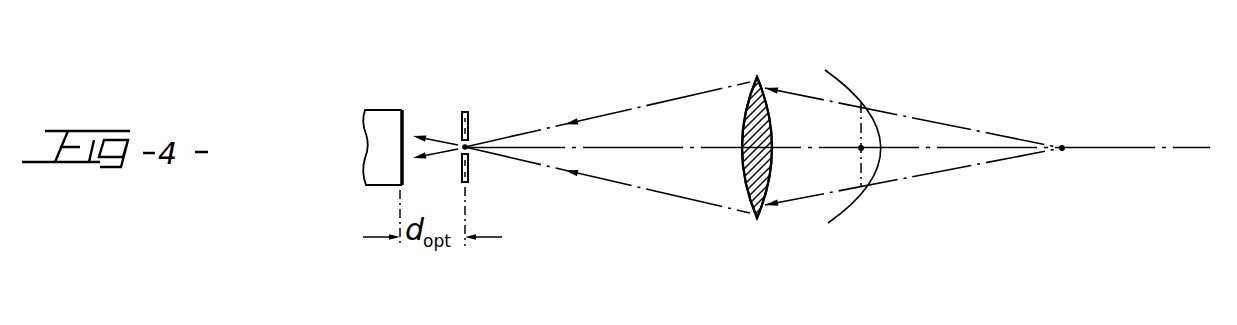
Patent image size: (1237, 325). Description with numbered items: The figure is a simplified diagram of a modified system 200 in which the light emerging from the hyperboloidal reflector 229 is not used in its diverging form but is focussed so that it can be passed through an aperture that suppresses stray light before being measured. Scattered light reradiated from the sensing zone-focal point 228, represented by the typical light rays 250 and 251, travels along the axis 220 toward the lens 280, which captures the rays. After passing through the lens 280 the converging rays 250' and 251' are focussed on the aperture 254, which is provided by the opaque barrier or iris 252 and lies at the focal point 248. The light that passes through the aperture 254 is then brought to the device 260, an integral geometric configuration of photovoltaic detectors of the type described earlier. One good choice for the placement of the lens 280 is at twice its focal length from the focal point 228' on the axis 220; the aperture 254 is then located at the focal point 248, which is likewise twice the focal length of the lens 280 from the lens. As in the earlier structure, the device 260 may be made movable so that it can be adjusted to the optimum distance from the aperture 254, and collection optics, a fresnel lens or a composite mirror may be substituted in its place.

The system 200 is at (728, 63).
The axis 220 is at (648, 147).
The sensing zone-focal point 228 is at (892, 162).
The focal point 228' is at (1096, 127).
The hyperboloidal reflector 229 is at (873, 122).
The focal point 248 is at (468, 156).
The light ray 250 is at (913, 104).
The light ray 250' is at (607, 107).
The light ray 251 is at (913, 199).
The light ray 251' is at (607, 186).
The opaque barrier or iris 252 is at (468, 118).
The aperture 254 is at (461, 143).
The device 260 is at (380, 110).
The lens 280 is at (757, 77).